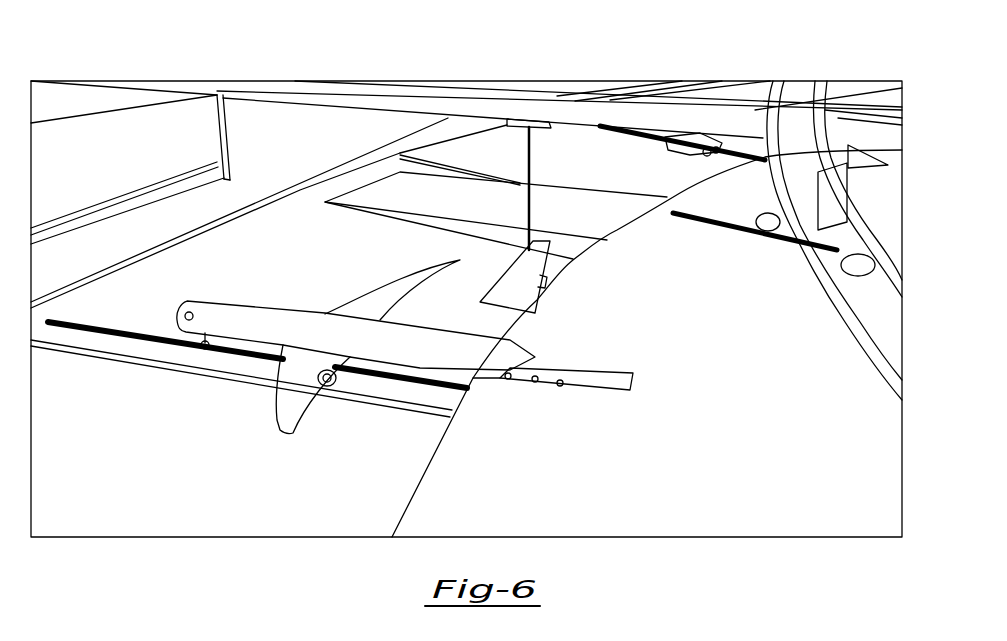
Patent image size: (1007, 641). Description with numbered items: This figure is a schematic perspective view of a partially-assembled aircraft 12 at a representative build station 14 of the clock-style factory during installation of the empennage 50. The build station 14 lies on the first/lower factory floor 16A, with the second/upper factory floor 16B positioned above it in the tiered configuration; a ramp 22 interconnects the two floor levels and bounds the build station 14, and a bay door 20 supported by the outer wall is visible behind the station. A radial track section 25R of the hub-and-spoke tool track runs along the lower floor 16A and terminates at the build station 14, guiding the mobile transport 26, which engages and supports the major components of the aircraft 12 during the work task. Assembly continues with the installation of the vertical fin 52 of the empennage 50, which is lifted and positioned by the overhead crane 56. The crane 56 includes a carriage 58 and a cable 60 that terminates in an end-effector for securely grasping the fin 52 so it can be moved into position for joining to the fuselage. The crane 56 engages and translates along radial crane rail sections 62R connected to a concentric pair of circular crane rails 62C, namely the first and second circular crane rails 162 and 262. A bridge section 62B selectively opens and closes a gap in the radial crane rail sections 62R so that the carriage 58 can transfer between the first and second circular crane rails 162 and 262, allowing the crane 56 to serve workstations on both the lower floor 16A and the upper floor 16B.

The aircraft 12 is at (311, 291).
The build station 14 is at (140, 476).
The first/lower factory floor 16A is at (200, 273).
The second/upper factory floor 16B is at (805, 410).
The bay door 20 is at (278, 140).
The ramp 22 is at (462, 210).
The radial track section 25R is at (88, 325).
The mobile transport 26 is at (510, 367).
The empennage 50 is at (573, 297).
The vertical fin 52 is at (528, 301).
The overhead crane 56 is at (474, 66).
The carriage 58 is at (525, 126).
The cable 60 is at (531, 168).
The radial crane rail section 62R is at (565, 112).
The circular crane rails 62C is at (836, 214).
The bridge section 62B is at (860, 185).
The first circular crane rail 162 is at (800, 263).
The second circular crane rail 262 is at (877, 230).